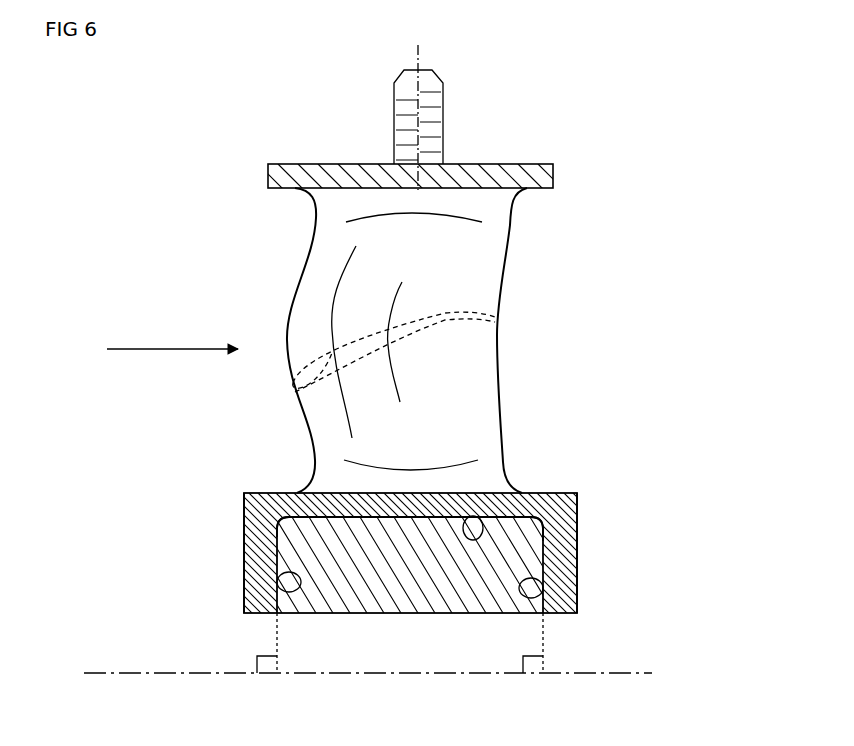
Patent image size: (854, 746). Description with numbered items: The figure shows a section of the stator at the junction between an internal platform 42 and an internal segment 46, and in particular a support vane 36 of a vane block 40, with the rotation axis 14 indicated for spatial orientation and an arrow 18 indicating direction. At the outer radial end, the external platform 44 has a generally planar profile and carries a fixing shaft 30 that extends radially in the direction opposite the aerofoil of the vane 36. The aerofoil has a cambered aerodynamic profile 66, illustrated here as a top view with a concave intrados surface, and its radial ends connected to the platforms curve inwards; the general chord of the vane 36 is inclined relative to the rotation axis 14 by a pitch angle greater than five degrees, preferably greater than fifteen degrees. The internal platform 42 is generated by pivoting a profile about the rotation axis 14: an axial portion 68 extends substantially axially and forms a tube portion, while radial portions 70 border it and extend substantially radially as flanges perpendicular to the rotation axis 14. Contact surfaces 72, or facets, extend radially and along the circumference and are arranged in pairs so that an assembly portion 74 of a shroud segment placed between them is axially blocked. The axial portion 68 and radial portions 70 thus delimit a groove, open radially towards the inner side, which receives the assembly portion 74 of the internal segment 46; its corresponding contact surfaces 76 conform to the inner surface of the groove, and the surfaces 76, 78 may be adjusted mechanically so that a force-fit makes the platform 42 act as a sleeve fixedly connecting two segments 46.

The rotation axis 14 is at (118, 672).
The flow direction 18 is at (172, 335).
The fixing shaft 30 is at (403, 120).
The support vane 36 is at (600, 366).
The vane block 40 is at (603, 128).
The internal platform 42 is at (594, 466).
The external platform 44 is at (496, 175).
The internal segment 46 is at (389, 645).
The cambered aerodynamic profile 66 is at (300, 355).
The axial portion 68 is at (382, 507).
The radial portions 70 is at (262, 560).
The contact surfaces 72 is at (290, 574).
The assembly portion 74 is at (473, 595).
The contact surfaces of the assembly portion 76 is at (277, 537).
The surfaces 78 is at (475, 517).